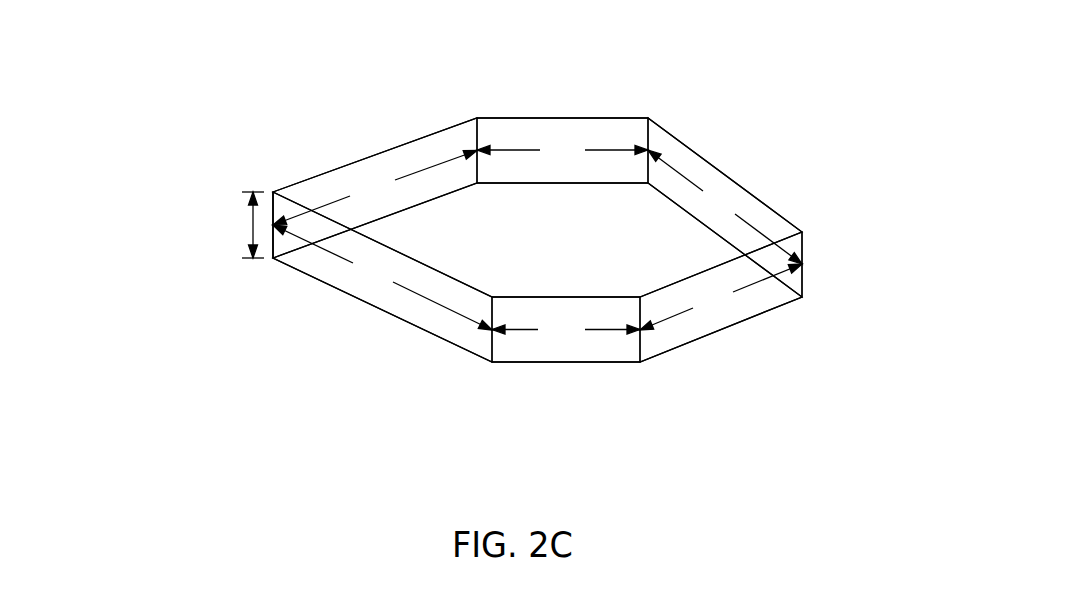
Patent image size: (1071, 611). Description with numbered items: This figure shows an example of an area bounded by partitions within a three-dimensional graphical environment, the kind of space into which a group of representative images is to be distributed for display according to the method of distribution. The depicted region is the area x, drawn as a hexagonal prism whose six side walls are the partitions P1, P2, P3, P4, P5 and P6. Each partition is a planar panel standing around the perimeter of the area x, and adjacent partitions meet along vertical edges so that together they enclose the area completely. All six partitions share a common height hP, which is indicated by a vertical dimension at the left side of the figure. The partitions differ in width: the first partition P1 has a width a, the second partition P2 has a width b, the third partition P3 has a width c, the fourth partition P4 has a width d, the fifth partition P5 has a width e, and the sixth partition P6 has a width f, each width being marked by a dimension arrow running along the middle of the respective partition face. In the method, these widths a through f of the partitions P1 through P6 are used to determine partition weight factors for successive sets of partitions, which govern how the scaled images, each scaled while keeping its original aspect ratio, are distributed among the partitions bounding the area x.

The first partition P1 is at (362, 299).
The second partition P2 is at (527, 362).
The third partition P3 is at (723, 329).
The fourth partition P4 is at (710, 158).
The fifth partition P5 is at (560, 117).
The sixth partition P6 is at (382, 151).
The width of partition P1 a is at (382, 277).
The width of partition P2 b is at (566, 328).
The width of partition P3 c is at (721, 297).
The width of partition P4 d is at (725, 207).
The width of partition P5 e is at (562, 151).
The width of partition P6 f is at (375, 188).
The common partition height hP is at (244, 225).
The area x is at (537, 240).